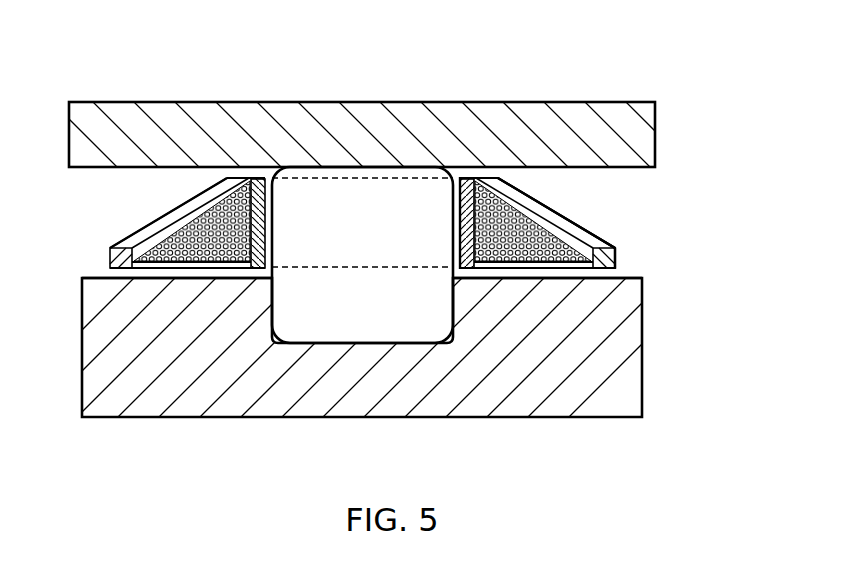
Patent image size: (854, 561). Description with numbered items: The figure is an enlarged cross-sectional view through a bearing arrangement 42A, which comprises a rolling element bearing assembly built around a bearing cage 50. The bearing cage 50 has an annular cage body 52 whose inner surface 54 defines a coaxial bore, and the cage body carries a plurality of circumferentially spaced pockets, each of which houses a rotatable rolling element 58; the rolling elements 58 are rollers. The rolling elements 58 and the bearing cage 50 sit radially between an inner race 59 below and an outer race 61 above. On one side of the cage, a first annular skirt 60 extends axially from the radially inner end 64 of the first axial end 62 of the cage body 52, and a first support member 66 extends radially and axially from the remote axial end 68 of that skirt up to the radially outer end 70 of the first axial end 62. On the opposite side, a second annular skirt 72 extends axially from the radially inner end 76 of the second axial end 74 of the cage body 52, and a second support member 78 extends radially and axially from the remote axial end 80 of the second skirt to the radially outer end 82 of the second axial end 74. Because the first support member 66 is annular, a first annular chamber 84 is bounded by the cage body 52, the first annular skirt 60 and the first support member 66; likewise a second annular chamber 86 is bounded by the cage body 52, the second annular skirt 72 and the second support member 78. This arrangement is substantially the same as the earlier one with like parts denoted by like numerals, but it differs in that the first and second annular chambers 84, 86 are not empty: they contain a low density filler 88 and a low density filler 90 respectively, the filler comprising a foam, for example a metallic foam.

The bearing arrangement 42A is at (712, 212).
The bearing cage 50 is at (616, 258).
The annular cage body 52 is at (497, 182).
The inner surface 54 is at (472, 266).
The rolling element 58 is at (375, 207).
The inner race 59 is at (100, 383).
The first annular skirt 60 is at (172, 258).
The outer race 61 is at (329, 105).
The first axial end 62 is at (190, 206).
The radially inner end 64 is at (160, 228).
The first support member 66 is at (213, 190).
The remote axial end 68 is at (110, 260).
The radially outer end 70 is at (258, 188).
The second annular skirt 72 is at (583, 262).
The second axial end 74 is at (535, 207).
The radially inner end 76 is at (537, 265).
The second support member 78 is at (530, 198).
The remote axial end 80 is at (612, 270).
The radially outer end 82 is at (468, 185).
The first annular chamber 84 is at (124, 277).
The second annular chamber 86 is at (560, 265).
The low density filler 88 is at (228, 176).
The low density filler 90 is at (600, 254).